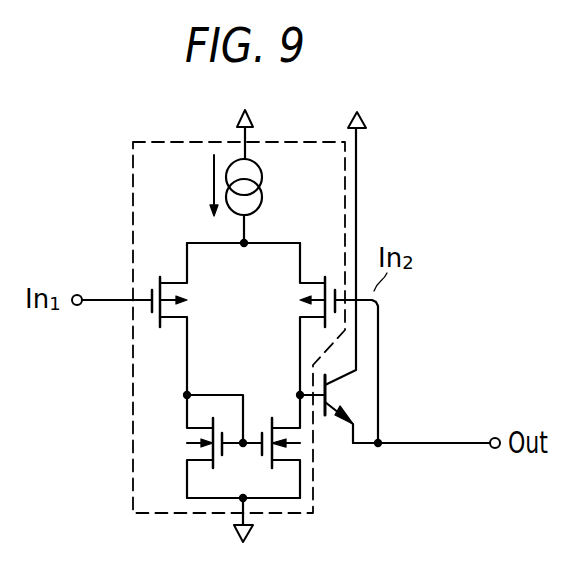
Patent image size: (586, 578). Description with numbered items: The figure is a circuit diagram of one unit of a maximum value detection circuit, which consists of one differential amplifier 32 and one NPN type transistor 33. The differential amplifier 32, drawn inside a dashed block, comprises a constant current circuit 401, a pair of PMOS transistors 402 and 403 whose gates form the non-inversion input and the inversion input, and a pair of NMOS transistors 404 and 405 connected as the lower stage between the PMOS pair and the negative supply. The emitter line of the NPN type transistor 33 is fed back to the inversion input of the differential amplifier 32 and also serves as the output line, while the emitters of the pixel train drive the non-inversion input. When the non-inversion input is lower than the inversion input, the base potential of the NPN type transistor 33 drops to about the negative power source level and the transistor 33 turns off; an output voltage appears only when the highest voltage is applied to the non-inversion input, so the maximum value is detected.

The differential amplifier 32 is at (322, 140).
The NPN type transistor 33 is at (340, 400).
The constant current circuit 401 is at (262, 190).
The PMOS transistor 402 is at (170, 266).
The PMOS transistor 403 is at (316, 272).
The NMOS transistor 404 is at (181, 452).
The NMOS transistor 405 is at (301, 452).